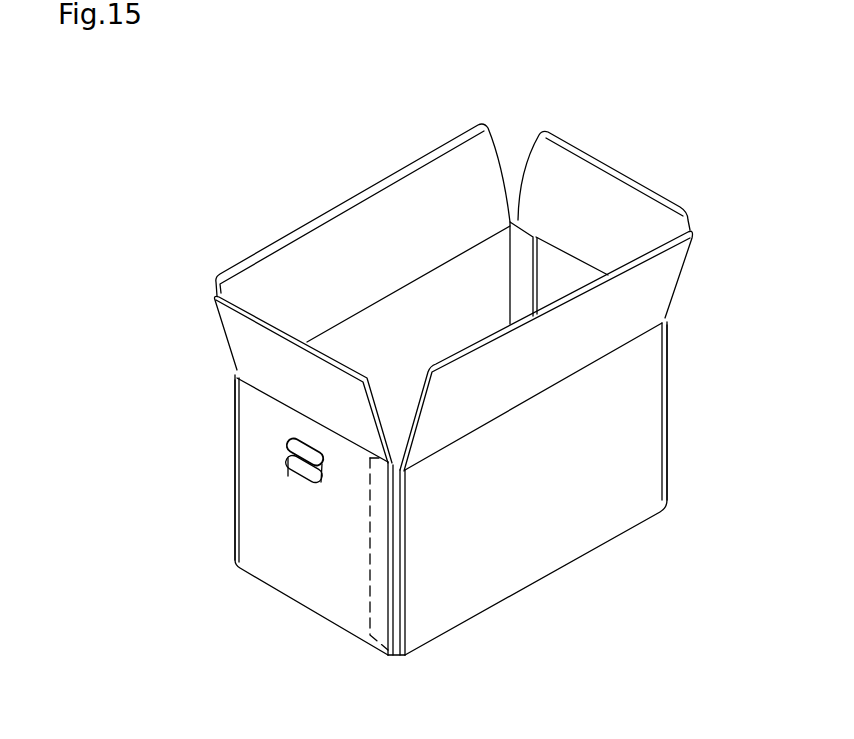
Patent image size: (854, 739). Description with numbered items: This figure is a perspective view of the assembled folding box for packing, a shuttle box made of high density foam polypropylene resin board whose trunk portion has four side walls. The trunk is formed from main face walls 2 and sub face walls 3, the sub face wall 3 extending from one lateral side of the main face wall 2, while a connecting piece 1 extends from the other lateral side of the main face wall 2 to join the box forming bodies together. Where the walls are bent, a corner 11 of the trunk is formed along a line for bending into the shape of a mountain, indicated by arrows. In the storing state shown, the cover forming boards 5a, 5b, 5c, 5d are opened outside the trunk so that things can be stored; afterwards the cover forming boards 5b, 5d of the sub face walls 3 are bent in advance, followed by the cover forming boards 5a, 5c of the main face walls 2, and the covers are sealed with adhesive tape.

The connecting piece 1 is at (518, 270).
The main face wall 2 is at (528, 502).
The sub face wall 3 is at (302, 545).
The cover forming board 5a is at (638, 300).
The cover forming board 5b is at (602, 210).
The cover forming board 5c is at (358, 243).
The cover forming board 5d is at (265, 366).
The corner 11 is at (673, 387).